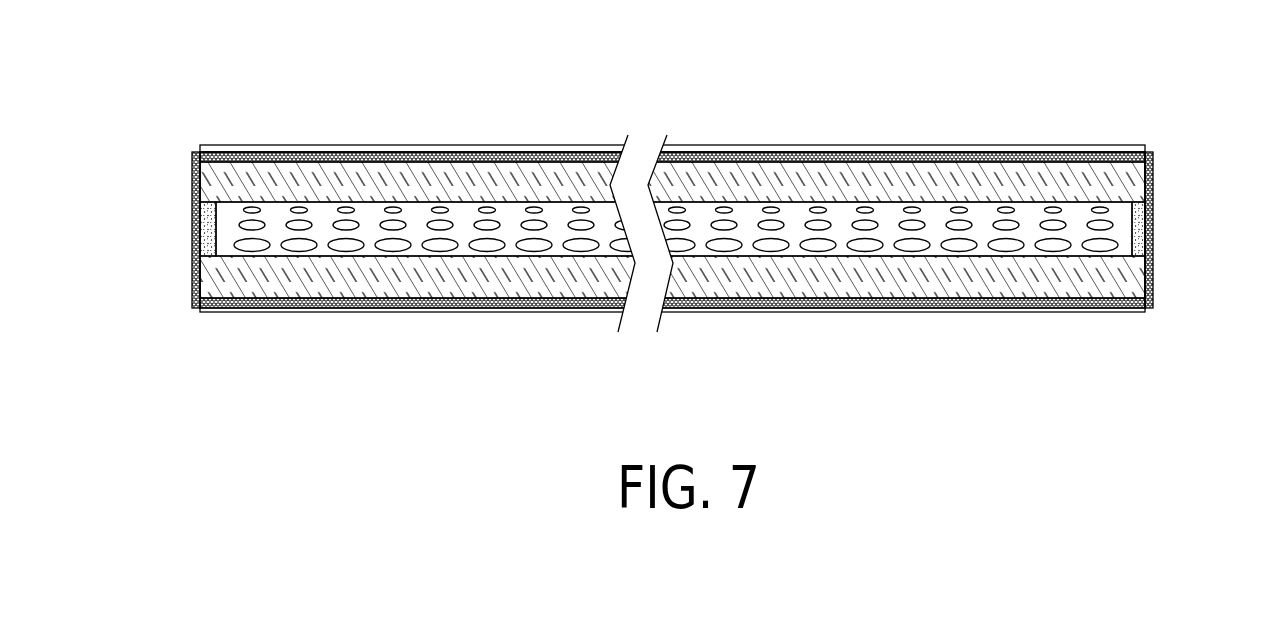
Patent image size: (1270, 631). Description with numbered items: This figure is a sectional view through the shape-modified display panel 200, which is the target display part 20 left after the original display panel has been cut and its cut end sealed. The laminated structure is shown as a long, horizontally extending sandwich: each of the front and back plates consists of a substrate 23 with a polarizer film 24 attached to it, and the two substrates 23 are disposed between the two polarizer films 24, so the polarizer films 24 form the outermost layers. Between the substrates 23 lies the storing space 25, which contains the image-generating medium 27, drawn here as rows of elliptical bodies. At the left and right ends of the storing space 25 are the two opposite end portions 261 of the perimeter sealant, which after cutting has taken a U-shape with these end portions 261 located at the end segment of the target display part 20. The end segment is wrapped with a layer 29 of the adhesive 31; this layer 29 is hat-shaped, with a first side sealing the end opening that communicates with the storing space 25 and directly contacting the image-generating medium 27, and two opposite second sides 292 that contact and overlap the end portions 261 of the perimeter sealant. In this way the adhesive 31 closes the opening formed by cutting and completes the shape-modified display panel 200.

The shape-modified display panel 200 is at (674, 206).
The target display part 20 is at (716, 144).
The substrate 23 is at (1033, 182).
The polarizer film 24 is at (518, 150).
The storing space 25 is at (792, 235).
The image-generating medium 27 is at (345, 248).
The layer of adhesive 29 is at (842, 141).
The adhesive 31 is at (977, 157).
The end portions of the perimeter sealant 261 is at (208, 230).
The second sides of the adhesive layer 292 is at (190, 187).